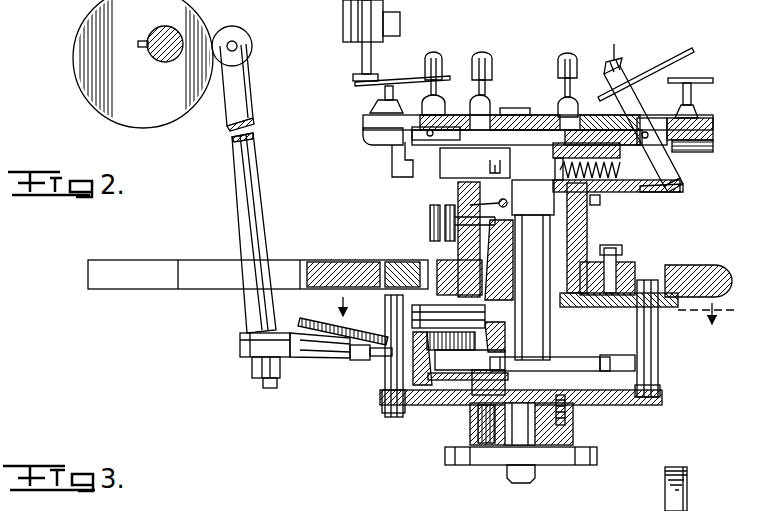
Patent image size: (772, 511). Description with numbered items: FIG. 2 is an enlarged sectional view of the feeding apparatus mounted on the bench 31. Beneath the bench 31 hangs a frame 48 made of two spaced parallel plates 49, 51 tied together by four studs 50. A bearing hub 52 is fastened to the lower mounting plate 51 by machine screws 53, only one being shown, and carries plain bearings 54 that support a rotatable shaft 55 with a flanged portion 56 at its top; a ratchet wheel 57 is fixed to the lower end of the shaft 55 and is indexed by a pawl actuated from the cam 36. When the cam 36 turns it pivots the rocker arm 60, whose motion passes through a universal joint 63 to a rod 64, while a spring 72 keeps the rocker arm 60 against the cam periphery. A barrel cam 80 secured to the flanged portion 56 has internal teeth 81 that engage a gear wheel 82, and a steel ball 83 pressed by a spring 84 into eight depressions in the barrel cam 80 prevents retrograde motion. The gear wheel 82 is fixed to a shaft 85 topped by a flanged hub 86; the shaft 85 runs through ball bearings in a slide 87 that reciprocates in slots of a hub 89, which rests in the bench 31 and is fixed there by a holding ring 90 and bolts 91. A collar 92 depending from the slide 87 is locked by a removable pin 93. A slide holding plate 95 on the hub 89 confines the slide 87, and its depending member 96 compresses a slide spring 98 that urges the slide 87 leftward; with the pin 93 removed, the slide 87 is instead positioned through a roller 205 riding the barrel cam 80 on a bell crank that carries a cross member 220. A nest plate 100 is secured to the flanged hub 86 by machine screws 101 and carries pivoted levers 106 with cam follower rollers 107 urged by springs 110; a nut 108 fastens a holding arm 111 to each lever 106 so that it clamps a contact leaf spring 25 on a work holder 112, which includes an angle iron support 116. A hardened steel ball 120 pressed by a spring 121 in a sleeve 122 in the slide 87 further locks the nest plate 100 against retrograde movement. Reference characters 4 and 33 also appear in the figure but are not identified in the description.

In FIG. 2, the section line arrow 4 is at (530, 315).
In FIG. 2, the contact leaf spring 25 is at (362, 78).
In FIG. 2, the bench 31 is at (130, 274).
In FIG. 2, the pin of disc 33 is at (150, 37).
In FIG. 2, the cam 36 is at (80, 68).
In FIG. 3, the cam 36 is at (690, 493).
In FIG. 2, the frame 48 is at (379, 414).
In FIG. 2, the plate 49 is at (352, 262).
In FIG. 2, the studs 50 is at (660, 329).
In FIG. 2, the lower mounting plate 51 is at (398, 416).
In FIG. 2, the bearing hub 52 is at (588, 442).
In FIG. 2, the machine screws 53 is at (566, 422).
In FIG. 2, the plain bearings 54 is at (508, 470).
In FIG. 2, the rotatable shaft 55 is at (526, 470).
In FIG. 2, the flanged portion 56 is at (592, 406).
In FIG. 2, the ratchet wheel 57 is at (460, 466).
In FIG. 2, the rocker arm 60 is at (250, 215).
In FIG. 2, the universal joint 63 is at (240, 341).
In FIG. 2, the rod 64 is at (273, 368).
In FIG. 2, the spring 72 is at (305, 318).
In FIG. 2, the barrel cam 80 is at (420, 406).
In FIG. 2, the internal teeth 81 is at (622, 363).
In FIG. 2, the gear wheel 82 is at (640, 390).
In FIG. 2, the steel ball 83 is at (480, 403).
In FIG. 2, the spring 84 is at (470, 437).
In FIG. 2, the shaft 85 is at (537, 322).
In FIG. 2, the flanged hub 86 is at (528, 118).
In FIG. 2, the slide 87 is at (606, 196).
In FIG. 2, the hub 89 is at (573, 308).
In FIG. 2, the holding ring 90 is at (640, 252).
In FIG. 2, the bolts 91 is at (614, 250).
In FIG. 2, the collar 92 is at (588, 226).
In FIG. 2, the removable pin 93 is at (468, 205).
In FIG. 2, the slide holding plate 95 is at (614, 43).
In FIG. 2, the depending member 96 is at (632, 157).
In FIG. 2, the slide spring 98 is at (650, 166).
In FIG. 2, the nest plate 100 is at (715, 122).
In FIG. 2, the machine screws 101 is at (582, 116).
In FIG. 2, the lever 106 is at (418, 148).
In FIG. 2, the cam follower roller 107 is at (668, 184).
In FIG. 2, the nut 108 is at (440, 58).
In FIG. 2, the spring 110 is at (632, 110).
In FIG. 2, the holding arm 111 is at (386, 78).
In FIG. 2, the work holder 112 is at (704, 61).
In FIG. 2, the angle iron support 116 is at (380, 104).
In FIG. 2, the hardened steel ball 120 is at (515, 115).
In FIG. 2, the spring 121 is at (498, 166).
In FIG. 2, the sleeve 122 is at (533, 197).
In FIG. 2, the roller 205 is at (362, 360).
In FIG. 2, the cross member 220 is at (436, 234).